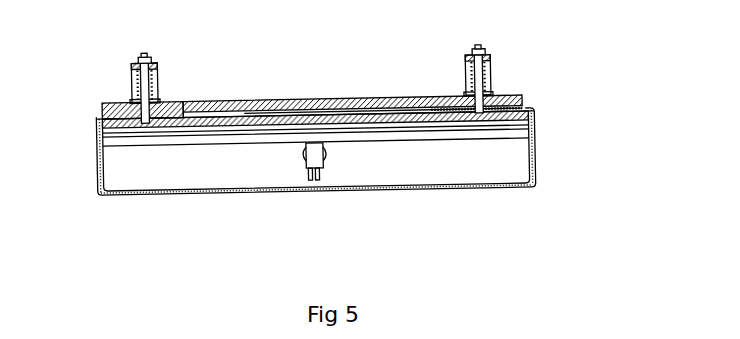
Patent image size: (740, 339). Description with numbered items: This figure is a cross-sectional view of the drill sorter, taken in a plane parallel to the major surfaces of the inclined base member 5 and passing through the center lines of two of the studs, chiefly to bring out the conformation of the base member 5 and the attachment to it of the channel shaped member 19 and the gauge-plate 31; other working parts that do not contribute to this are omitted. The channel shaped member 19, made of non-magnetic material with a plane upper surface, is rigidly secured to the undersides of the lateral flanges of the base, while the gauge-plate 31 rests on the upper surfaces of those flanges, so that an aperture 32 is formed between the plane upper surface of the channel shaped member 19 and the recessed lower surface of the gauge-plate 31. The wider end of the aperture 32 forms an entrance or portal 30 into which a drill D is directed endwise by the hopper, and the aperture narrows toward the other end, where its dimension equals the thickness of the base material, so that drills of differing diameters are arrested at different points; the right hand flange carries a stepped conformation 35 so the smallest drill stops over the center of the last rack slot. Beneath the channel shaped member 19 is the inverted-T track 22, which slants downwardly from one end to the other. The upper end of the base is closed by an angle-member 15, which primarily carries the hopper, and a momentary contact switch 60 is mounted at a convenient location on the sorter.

The base member 5 is at (97, 150).
The angle-member 15 is at (520, 150).
The channel shaped member 19 is at (248, 142).
The track 22 is at (386, 133).
The entrance or portal 30 is at (198, 111).
The gauge-plate 31 is at (382, 98).
The aperture 32 is at (243, 115).
The stepped conformation 35 is at (432, 111).
The momentary contact switch 60 is at (315, 180).
The drill D is at (342, 95).